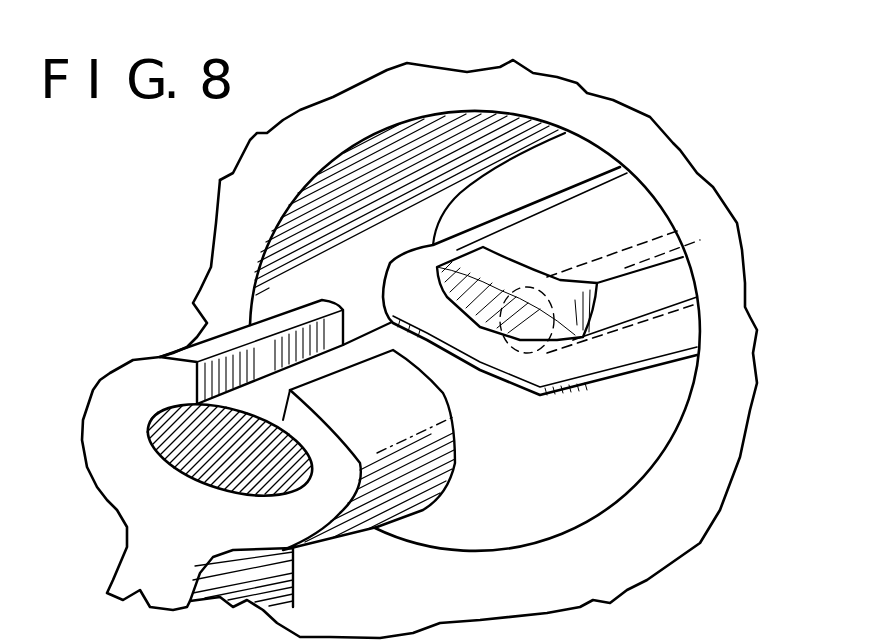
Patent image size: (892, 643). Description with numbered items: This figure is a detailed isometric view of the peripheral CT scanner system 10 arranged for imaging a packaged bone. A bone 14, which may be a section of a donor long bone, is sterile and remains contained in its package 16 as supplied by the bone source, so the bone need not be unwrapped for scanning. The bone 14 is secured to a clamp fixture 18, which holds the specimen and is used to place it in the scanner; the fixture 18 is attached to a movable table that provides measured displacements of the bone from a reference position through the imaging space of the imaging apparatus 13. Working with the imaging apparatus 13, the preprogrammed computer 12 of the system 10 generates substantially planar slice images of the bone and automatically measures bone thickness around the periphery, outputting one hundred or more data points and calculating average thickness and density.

The peripheral CT scanner system 10 is at (168, 242).
The preprogrammed computer 12 is at (205, 168).
The imaging apparatus 13 is at (371, 97).
The bone 14 is at (680, 230).
The package 16 is at (603, 357).
The clamp fixture 18 is at (130, 482).